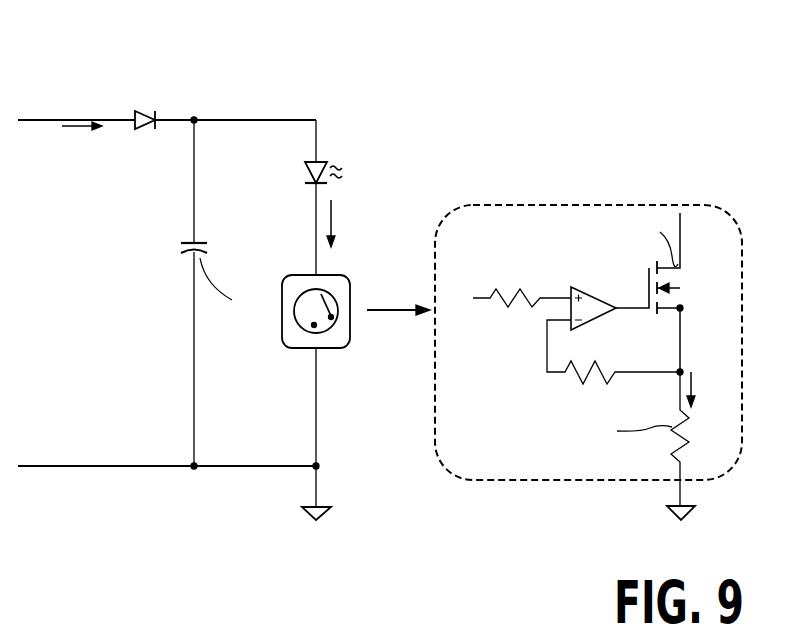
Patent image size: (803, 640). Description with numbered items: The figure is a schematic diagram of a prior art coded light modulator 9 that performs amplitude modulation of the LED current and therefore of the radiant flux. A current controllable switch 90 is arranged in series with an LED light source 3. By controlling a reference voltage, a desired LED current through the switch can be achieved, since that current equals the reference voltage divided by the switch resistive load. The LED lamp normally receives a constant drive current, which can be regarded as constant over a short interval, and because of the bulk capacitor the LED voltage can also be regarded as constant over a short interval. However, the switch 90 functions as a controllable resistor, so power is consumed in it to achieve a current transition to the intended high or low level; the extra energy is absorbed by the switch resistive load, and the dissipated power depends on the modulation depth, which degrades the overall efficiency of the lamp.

The LED driver circuit with current source 9 is at (380, 277).
The LED light source 3 is at (335, 163).
The current controllable switch 90 is at (348, 345).